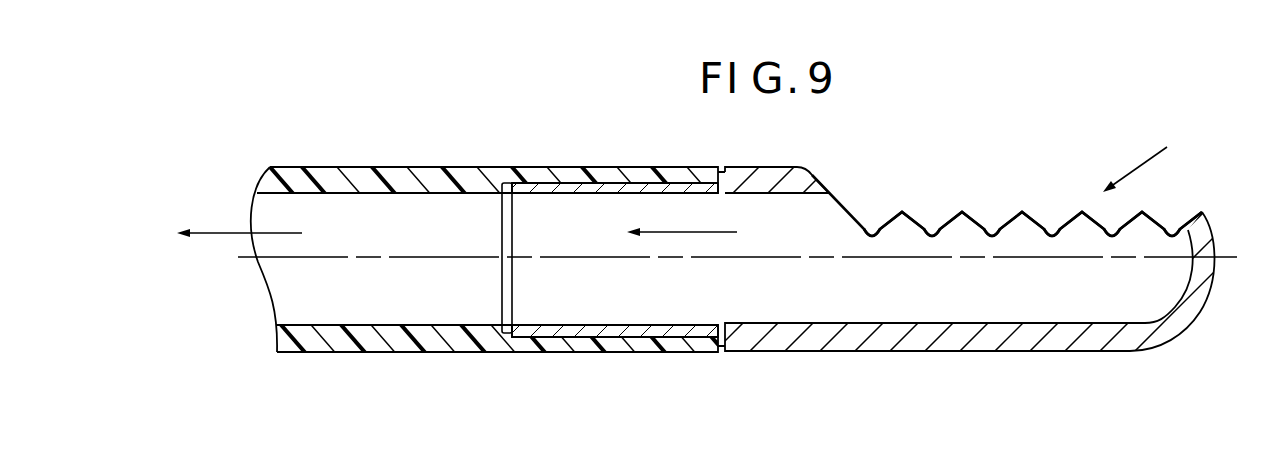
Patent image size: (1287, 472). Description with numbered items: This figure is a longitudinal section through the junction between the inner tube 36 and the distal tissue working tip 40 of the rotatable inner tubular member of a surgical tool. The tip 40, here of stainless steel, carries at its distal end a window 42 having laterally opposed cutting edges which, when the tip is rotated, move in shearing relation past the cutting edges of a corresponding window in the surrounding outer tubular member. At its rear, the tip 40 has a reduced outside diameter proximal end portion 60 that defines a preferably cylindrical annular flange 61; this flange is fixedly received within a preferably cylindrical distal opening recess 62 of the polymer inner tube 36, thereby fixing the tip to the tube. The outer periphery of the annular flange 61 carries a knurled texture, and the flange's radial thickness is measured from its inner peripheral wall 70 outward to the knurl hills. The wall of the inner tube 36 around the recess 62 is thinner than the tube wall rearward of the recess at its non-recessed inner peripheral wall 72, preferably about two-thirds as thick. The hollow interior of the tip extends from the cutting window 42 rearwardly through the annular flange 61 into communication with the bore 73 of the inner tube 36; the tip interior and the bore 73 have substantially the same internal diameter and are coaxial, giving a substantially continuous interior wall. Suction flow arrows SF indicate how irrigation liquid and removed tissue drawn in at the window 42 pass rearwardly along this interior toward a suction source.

The inner tube 36 is at (372, 355).
The tissue working tip 40 is at (837, 355).
The window 42 is at (970, 217).
The proximal end portion 60 is at (505, 227).
The annular flange 61 is at (560, 185).
The distal opening recess 62 is at (632, 183).
The inner peripheral wall 70 is at (643, 323).
The non-recessed inner peripheral wall 72 is at (382, 194).
The bore 73 is at (285, 285).
The suction flow arrows SF is at (220, 232).